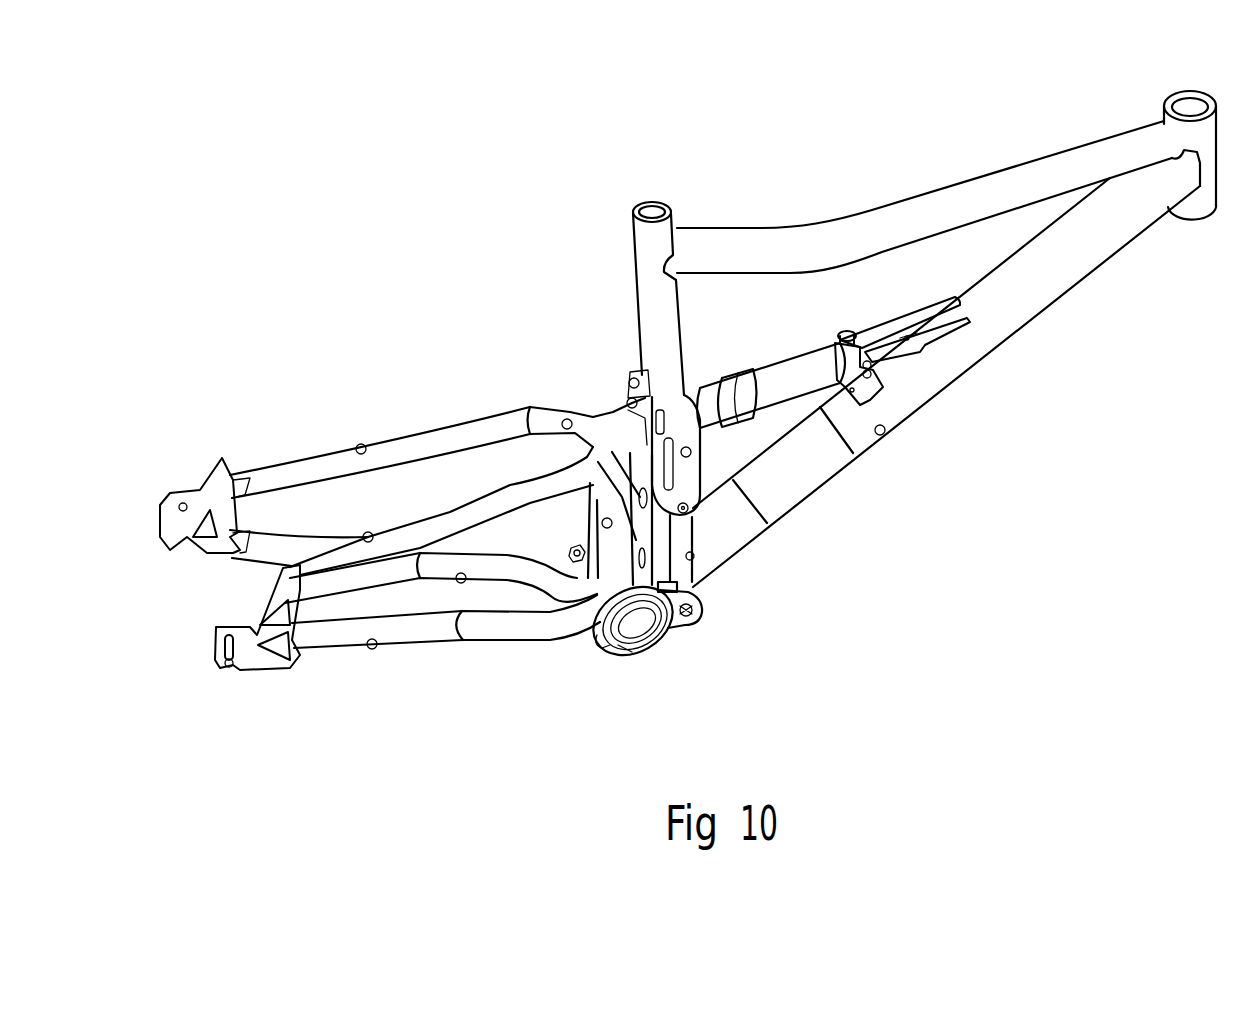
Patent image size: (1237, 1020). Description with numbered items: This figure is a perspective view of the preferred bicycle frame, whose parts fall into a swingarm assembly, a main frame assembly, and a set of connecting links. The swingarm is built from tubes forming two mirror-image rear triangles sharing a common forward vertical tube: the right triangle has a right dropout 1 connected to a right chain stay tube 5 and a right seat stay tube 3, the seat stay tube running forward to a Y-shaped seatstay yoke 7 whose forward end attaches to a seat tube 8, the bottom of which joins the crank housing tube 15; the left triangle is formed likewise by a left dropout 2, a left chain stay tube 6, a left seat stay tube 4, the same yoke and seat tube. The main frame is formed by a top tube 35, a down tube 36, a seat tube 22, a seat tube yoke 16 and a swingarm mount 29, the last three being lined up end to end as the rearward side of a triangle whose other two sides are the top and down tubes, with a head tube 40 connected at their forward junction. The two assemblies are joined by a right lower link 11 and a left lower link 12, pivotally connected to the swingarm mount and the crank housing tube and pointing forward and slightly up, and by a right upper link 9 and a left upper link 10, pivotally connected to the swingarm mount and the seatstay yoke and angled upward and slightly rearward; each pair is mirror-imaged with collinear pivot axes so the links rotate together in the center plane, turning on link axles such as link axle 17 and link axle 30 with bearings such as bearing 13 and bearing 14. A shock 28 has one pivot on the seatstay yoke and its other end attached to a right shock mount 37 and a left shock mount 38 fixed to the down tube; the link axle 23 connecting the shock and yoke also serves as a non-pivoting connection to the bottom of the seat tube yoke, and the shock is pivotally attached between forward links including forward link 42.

The right dropout 1 is at (215, 636).
The left dropout 2 is at (215, 462).
The right seat stay tube 3 is at (366, 534).
The left seat stay tube 4 is at (360, 447).
The right chain stay tube 5 is at (372, 648).
The left chain stay tube 6 is at (461, 582).
The seatstay yoke 7 is at (565, 421).
The seat tube 8 is at (604, 520).
The right upper link 9 is at (636, 406).
The left upper link 10 is at (635, 375).
The right lower link 11 is at (600, 646).
The left lower link 12 is at (575, 550).
The bearing 13 is at (621, 653).
The bearing 14 is at (582, 570).
The crank housing tube 15 is at (641, 652).
The seat tube yoke 16 is at (690, 456).
The link axle 17 is at (631, 390).
The seat tube 22 is at (652, 198).
The link axle 23 is at (688, 510).
The shock 28 is at (812, 348).
The swingarm mount 29 is at (693, 557).
The link axle 30 is at (697, 621).
The top tube 35 is at (998, 168).
The down tube 36 is at (1028, 293).
The right shock mount 37 is at (927, 349).
The left shock mount 38 is at (902, 315).
The head tube 40 is at (1181, 108).
The forward link 42 is at (885, 430).